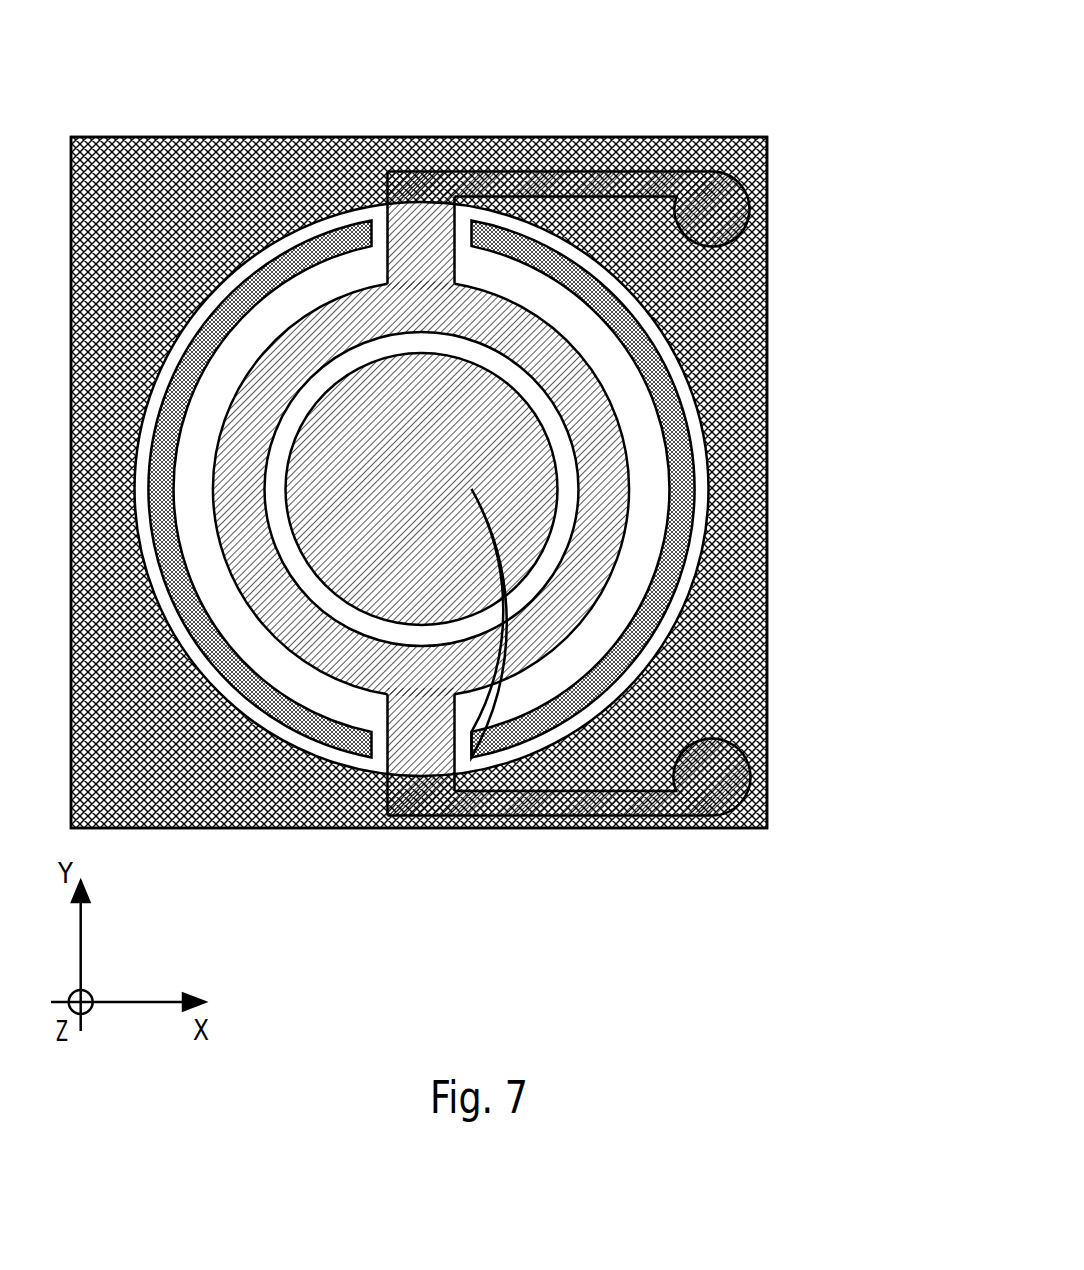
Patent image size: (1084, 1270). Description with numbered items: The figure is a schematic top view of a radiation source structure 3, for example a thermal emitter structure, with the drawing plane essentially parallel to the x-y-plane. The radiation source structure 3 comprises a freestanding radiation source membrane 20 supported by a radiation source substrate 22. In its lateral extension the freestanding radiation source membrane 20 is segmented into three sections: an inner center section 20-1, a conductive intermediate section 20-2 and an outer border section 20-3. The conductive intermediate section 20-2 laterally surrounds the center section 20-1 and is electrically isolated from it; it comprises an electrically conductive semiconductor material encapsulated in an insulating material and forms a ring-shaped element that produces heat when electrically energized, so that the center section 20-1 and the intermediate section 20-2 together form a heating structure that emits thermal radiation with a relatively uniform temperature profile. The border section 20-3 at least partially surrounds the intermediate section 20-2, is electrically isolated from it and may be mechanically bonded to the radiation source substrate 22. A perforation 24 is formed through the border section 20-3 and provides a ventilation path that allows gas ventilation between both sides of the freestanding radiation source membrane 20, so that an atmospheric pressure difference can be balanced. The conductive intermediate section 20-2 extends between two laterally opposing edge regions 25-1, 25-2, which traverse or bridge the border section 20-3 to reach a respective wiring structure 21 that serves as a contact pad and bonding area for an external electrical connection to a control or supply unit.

The radiation source structure 3 is at (821, 50).
The freestanding radiation source membrane 20 is at (559, 490).
The center section 20-1 is at (520, 488).
The conductive intermediate section 20-2 is at (535, 490).
The border section 20-3 is at (627, 393).
The wiring structure 21 is at (570, 176).
The radiation source substrate 22 is at (748, 290).
The perforation 24 is at (627, 620).
The edge region 25-1 is at (403, 216).
The edge region 25-2 is at (403, 740).